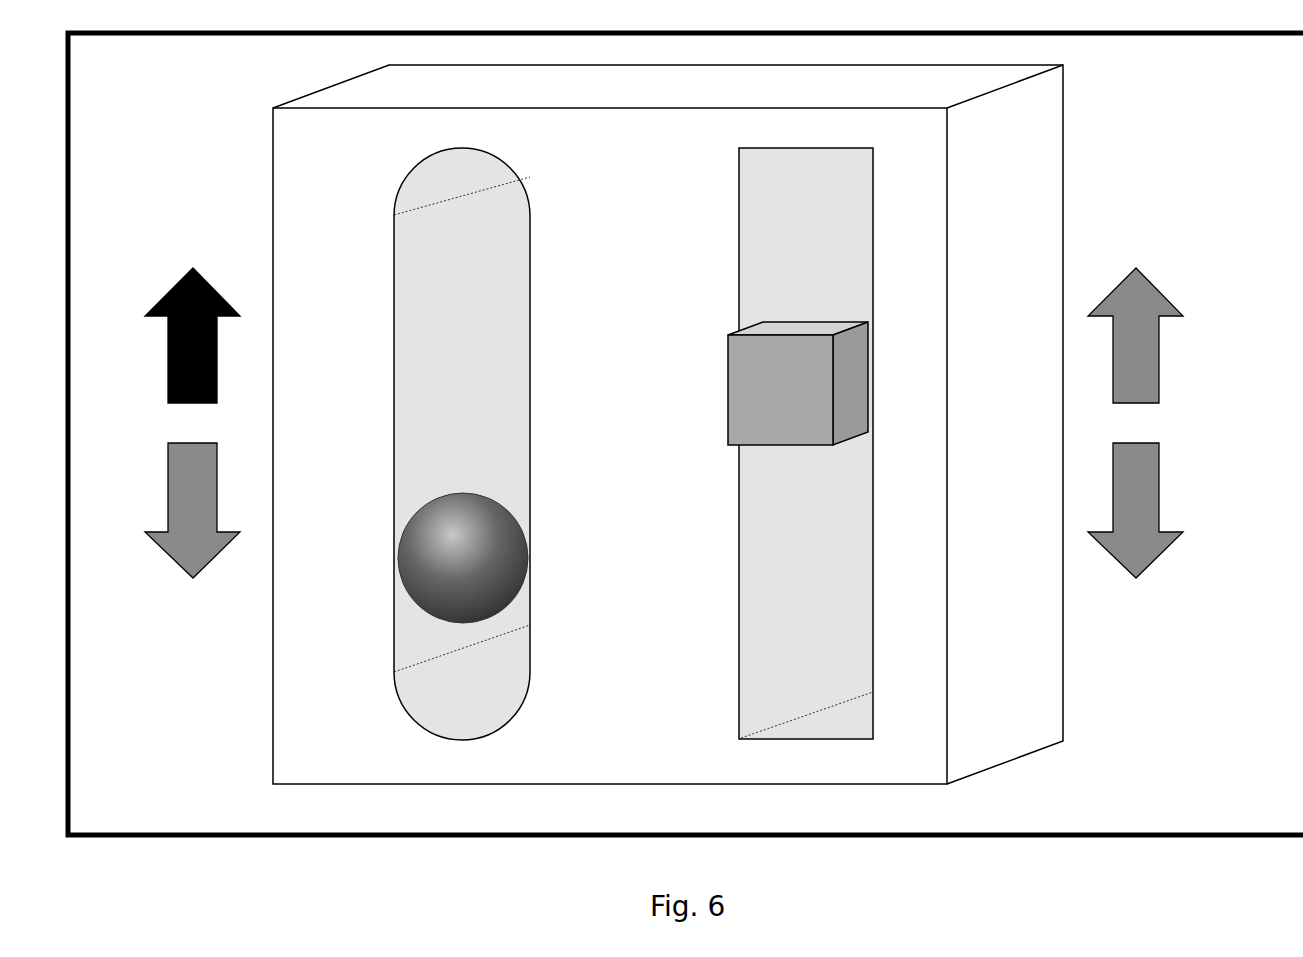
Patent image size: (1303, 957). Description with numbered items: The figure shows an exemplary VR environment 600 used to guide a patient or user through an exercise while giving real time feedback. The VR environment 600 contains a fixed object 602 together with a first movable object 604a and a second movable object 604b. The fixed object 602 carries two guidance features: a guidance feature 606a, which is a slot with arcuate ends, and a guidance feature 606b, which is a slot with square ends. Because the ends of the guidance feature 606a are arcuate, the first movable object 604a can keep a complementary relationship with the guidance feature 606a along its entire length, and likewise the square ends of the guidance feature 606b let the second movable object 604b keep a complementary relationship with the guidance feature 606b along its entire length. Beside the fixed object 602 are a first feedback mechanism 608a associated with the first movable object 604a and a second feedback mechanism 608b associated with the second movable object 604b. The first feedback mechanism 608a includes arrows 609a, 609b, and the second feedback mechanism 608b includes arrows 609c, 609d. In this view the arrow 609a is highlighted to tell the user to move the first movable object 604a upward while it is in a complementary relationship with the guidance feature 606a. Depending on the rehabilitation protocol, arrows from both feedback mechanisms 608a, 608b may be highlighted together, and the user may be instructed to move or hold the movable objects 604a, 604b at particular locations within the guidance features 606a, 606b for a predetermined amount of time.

The VR environment 600 is at (208, 23).
The fixed object 602 is at (668, 424).
The first movable object 604a is at (420, 558).
The second movable object 604b is at (746, 381).
The guidance feature 606a is at (422, 225).
The guidance feature 606b is at (757, 225).
The first feedback mechanism 608a is at (176, 605).
The second feedback mechanism 608b is at (1162, 589).
The arrow 609a is at (167, 360).
The arrow 609b is at (192, 490).
The arrow 609c is at (1161, 360).
The arrow 609d is at (1160, 495).